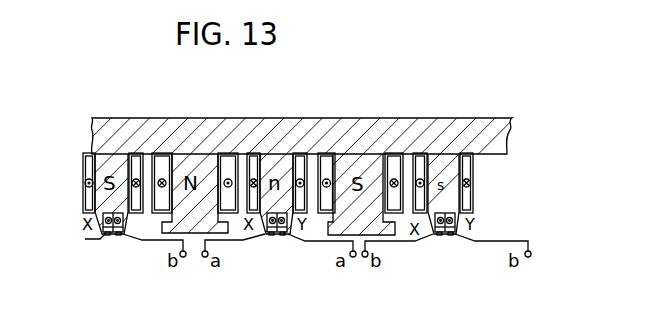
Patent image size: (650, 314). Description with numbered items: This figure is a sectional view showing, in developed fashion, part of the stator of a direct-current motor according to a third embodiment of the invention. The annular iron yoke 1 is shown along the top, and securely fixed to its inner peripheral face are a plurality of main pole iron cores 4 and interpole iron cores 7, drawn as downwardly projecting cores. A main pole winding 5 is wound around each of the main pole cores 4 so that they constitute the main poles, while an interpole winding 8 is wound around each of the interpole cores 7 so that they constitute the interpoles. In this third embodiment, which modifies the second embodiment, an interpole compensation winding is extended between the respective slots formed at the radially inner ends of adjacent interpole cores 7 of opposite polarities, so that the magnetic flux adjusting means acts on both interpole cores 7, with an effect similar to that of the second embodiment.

The yoke 1 is at (442, 152).
The main pole iron core 4 is at (365, 163).
The main pole winding 5 is at (322, 163).
The interpole iron core 7 is at (278, 167).
The interpole winding 8 is at (260, 153).